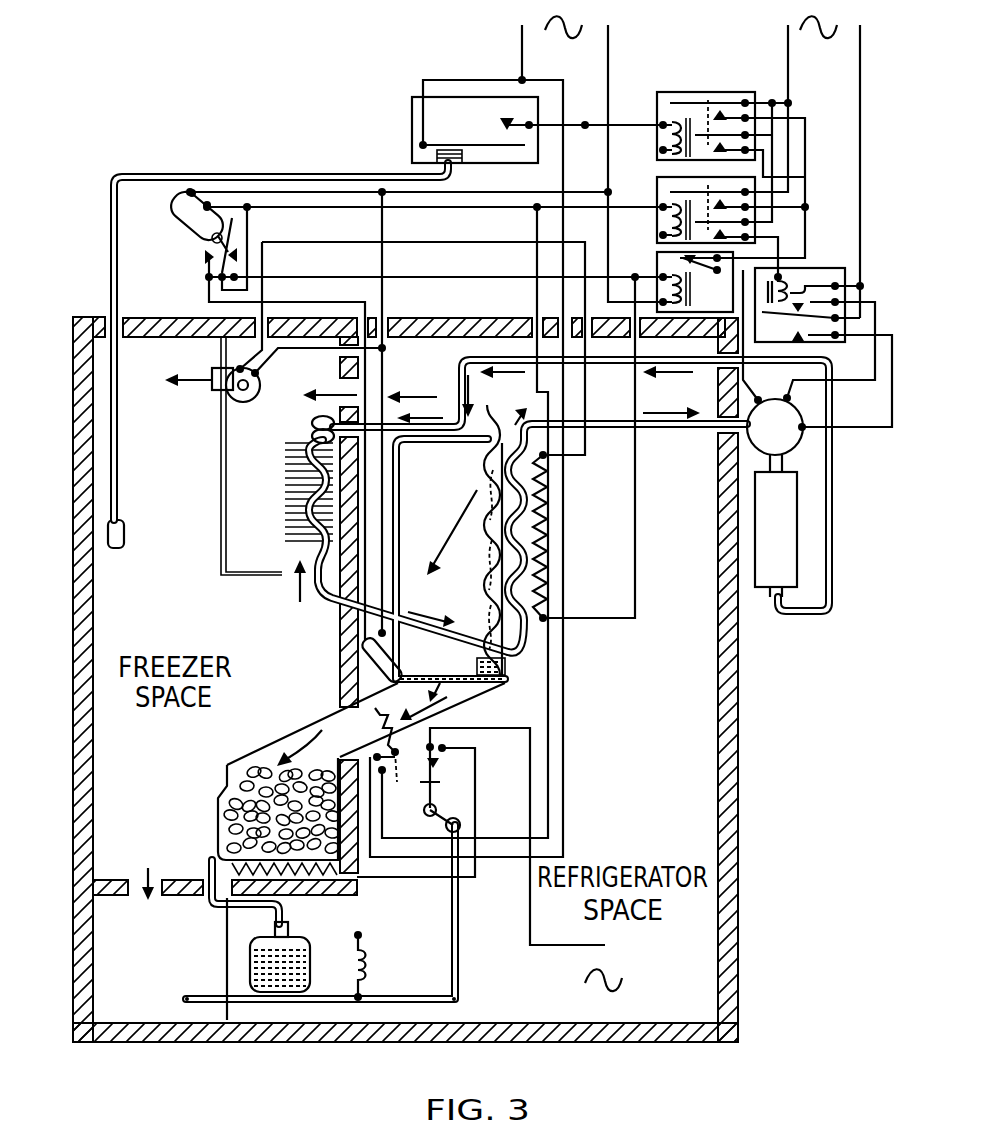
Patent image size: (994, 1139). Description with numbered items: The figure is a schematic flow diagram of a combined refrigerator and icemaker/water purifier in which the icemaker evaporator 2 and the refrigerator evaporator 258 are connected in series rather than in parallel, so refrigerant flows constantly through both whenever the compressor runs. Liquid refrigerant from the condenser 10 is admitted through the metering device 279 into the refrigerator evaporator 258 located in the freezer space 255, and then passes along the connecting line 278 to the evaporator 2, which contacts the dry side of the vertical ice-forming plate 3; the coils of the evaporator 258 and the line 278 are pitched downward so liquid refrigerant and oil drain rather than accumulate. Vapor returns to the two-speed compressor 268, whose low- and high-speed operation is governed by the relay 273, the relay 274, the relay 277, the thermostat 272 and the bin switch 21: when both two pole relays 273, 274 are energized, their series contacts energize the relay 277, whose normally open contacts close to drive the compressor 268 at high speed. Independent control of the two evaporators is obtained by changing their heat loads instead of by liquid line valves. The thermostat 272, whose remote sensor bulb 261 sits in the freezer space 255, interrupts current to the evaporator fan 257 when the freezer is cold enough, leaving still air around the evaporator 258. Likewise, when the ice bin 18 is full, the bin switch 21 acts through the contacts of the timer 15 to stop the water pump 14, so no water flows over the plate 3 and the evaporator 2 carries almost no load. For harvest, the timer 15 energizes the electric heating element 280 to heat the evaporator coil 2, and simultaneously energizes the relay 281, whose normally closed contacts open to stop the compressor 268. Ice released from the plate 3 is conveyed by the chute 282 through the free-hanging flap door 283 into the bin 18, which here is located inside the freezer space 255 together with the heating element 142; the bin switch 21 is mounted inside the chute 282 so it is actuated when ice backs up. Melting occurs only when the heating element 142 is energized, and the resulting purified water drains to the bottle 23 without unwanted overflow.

The evaporator 2 is at (527, 530).
The ice-forming plate 3 is at (498, 443).
The condenser 10 is at (800, 540).
The water pump 14 is at (368, 662).
The timer 15 is at (200, 252).
The ice bin 18 is at (215, 826).
The bin switch 21 is at (417, 770).
The bottle 23 is at (298, 937).
The electrical heating element 142 is at (338, 885).
The freezer space 255 is at (145, 367).
The evaporator fan 257 is at (223, 391).
The refrigerator evaporator 258 is at (287, 470).
The remote sensor bulb 261 is at (120, 550).
The two-speed compressor 268 is at (803, 412).
The thermostat 272 is at (412, 122).
The relay 273 is at (755, 85).
The relay 274 is at (760, 177).
The relay 277 is at (840, 259).
The connecting line 278 is at (337, 597).
The metering device 279 is at (318, 418).
The electric heating element 280 is at (537, 497).
The relay 281 is at (650, 262).
The chute 282 is at (458, 706).
The flap door 283 is at (340, 735).